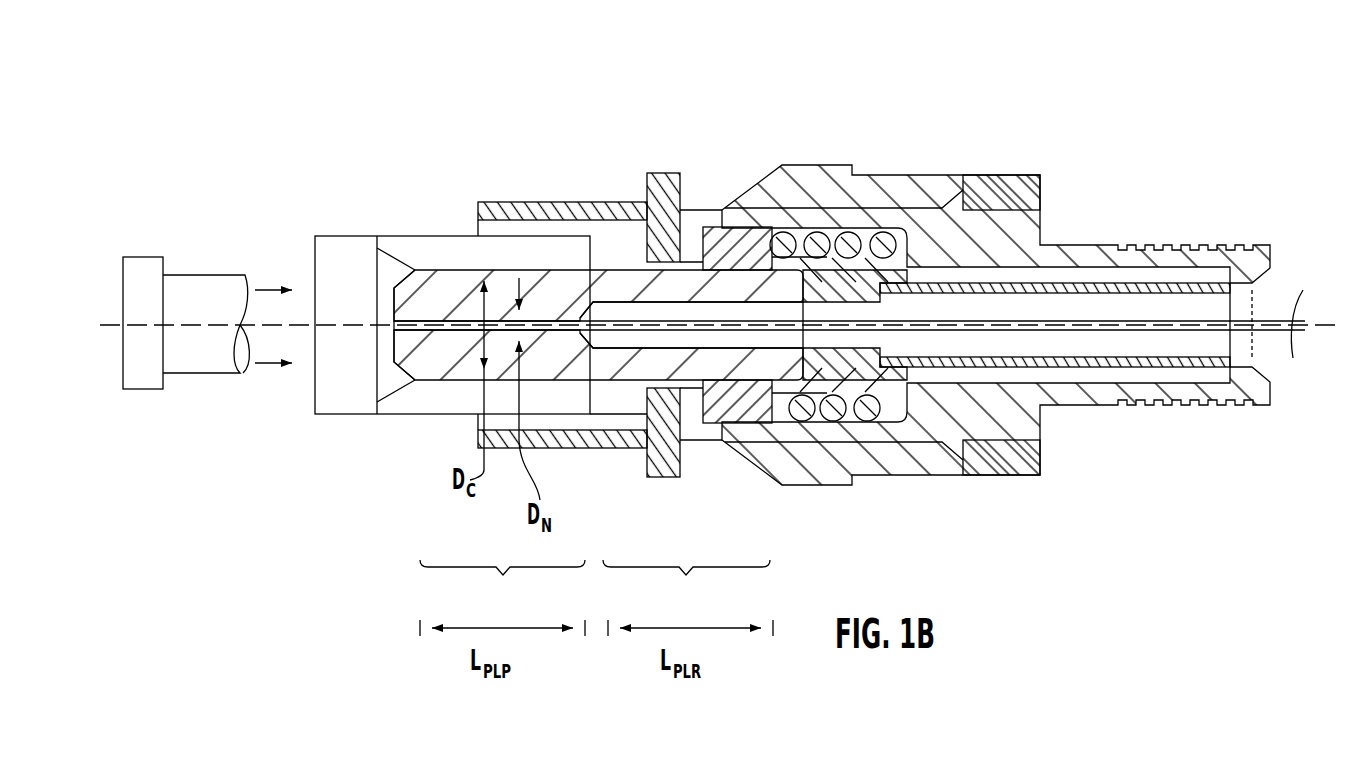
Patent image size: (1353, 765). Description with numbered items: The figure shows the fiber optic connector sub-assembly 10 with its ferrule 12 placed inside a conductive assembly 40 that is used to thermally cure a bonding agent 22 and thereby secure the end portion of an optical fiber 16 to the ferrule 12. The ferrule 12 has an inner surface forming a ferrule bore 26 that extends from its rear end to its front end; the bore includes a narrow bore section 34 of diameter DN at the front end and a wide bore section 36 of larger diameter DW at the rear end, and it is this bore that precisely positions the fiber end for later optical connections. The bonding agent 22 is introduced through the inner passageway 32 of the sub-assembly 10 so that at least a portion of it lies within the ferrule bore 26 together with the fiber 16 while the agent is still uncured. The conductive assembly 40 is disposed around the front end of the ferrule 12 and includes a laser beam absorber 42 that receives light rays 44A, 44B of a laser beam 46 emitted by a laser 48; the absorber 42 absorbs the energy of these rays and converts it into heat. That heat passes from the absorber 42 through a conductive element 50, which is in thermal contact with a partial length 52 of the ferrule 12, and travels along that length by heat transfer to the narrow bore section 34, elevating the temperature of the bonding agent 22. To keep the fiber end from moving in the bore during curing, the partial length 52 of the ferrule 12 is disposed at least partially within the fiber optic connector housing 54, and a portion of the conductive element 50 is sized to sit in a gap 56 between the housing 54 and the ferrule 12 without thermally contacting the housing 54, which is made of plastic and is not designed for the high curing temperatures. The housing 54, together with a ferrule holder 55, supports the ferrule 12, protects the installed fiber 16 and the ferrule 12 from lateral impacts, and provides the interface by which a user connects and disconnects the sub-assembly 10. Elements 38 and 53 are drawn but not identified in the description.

The fiber optic connector sub-assembly 10 is at (1128, 140).
The ferrule 12 is at (433, 293).
The optical fiber 16 is at (1163, 332).
The bonding agent 22 is at (540, 320).
The ferrule bore 26 is at (617, 420).
The inner passageway 32 is at (1147, 313).
The narrow bore section 34 is at (463, 330).
The wide bore section 36 is at (632, 298).
The spacer block 38 is at (580, 312).
The conductive assembly 40 is at (336, 182).
The laser beam absorber 42 is at (347, 238).
The light ray 44A is at (280, 288).
The light ray 44B is at (275, 365).
The laser beam 46 is at (190, 290).
The laser 48 is at (133, 277).
The conductive element 50 is at (450, 242).
The partial length of ferrule 52 is at (502, 585).
The relief section 53 is at (686, 585).
The fiber optic connector housing 54 is at (800, 173).
The ferrule holder 55 is at (733, 228).
The gap 56 is at (390, 265).